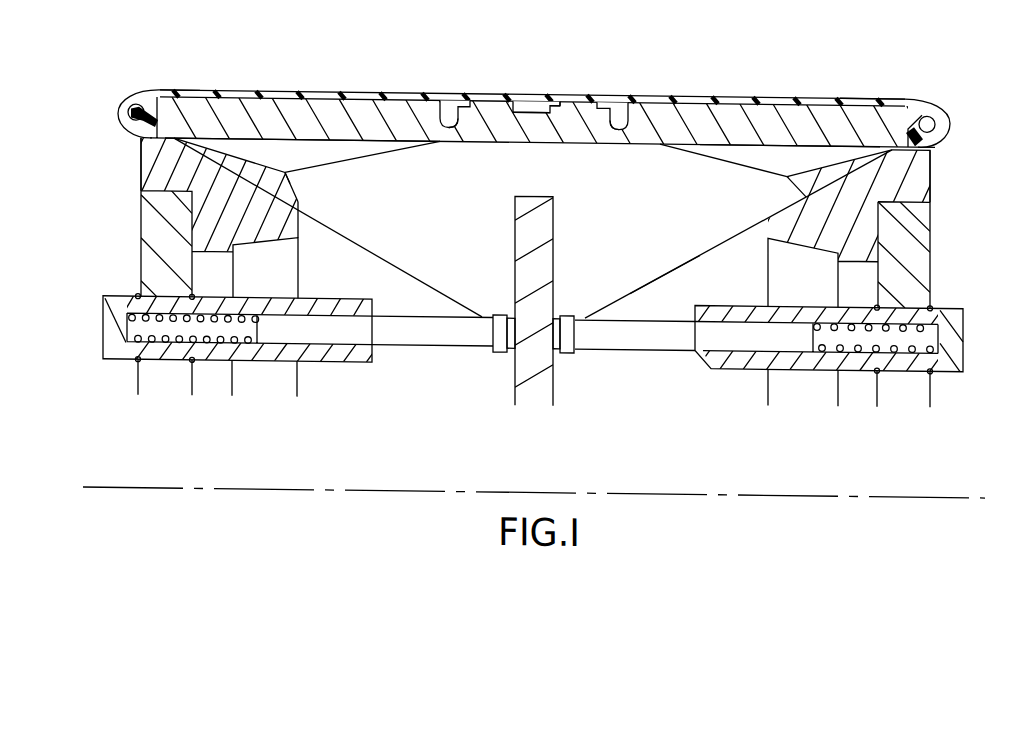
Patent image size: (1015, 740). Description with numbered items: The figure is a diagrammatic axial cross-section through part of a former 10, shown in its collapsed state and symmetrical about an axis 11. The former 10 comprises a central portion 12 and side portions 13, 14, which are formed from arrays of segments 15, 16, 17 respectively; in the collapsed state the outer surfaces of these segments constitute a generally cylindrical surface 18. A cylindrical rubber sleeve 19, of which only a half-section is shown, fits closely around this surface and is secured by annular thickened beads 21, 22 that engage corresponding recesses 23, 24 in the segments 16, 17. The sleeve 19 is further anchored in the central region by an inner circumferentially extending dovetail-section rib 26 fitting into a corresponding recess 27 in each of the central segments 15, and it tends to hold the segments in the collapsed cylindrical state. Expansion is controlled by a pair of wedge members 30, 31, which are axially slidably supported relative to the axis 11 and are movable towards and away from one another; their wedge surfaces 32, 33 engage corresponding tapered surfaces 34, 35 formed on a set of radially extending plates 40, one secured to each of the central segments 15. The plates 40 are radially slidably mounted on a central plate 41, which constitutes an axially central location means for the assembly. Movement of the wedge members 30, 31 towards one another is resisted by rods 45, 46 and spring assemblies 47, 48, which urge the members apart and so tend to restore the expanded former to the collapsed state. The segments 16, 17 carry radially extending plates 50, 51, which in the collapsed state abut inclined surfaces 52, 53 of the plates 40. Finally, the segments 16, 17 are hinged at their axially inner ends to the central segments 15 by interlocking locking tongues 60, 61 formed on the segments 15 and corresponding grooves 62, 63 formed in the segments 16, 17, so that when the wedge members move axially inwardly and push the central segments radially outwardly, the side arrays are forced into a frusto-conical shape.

The former 10 is at (670, 84).
The axis 11 is at (213, 483).
The central portion 12 is at (497, 96).
The side portion 13 is at (290, 108).
The side portion 14 is at (779, 110).
The central segments 15 is at (583, 103).
The segments 16 is at (383, 111).
The segments 17 is at (858, 109).
The cylindrical surface 18 is at (220, 89).
The rubber sleeve 19 is at (163, 90).
The annular thickened bead 21 is at (133, 134).
The annular thickened bead 22 is at (924, 132).
The recess 23 is at (148, 112).
The recess 24 is at (920, 109).
The dovetail-section rib 26 is at (532, 102).
The recess 27 is at (548, 100).
The wedge member 30 is at (217, 236).
The wedge member 31 is at (860, 230).
The wedge surface 32 is at (298, 199).
The wedge surface 33 is at (768, 210).
The tapered surface 34 is at (450, 312).
The tapered surface 35 is at (637, 285).
The radially extending plates 40 is at (473, 294).
The central plate 41 is at (547, 386).
The rod 45 is at (387, 340).
The rod 46 is at (705, 334).
The spring assembly 47 is at (240, 344).
The spring assembly 48 is at (822, 342).
The radially extending plate 50 is at (357, 156).
The radially extending plate 51 is at (740, 156).
The inclined surface 52 is at (287, 170).
The inclined surface 53 is at (784, 168).
The locking tongue 60 is at (449, 122).
The locking tongue 61 is at (618, 118).
The groove 62 is at (443, 98).
The groove 63 is at (631, 114).